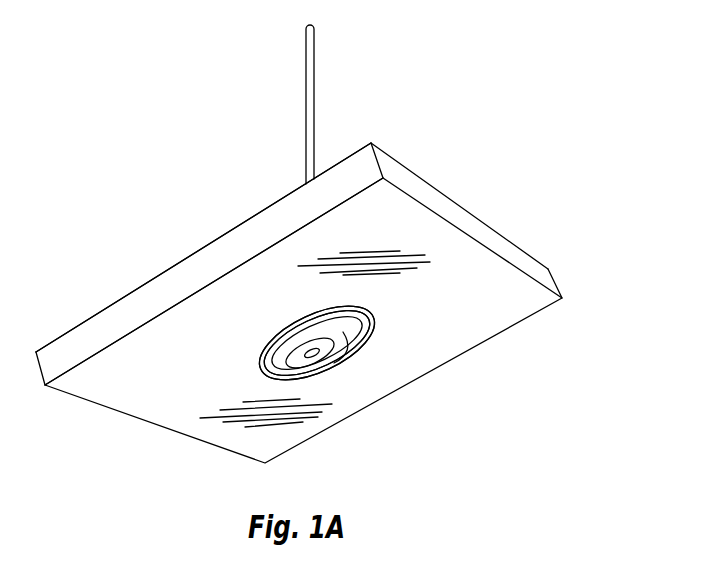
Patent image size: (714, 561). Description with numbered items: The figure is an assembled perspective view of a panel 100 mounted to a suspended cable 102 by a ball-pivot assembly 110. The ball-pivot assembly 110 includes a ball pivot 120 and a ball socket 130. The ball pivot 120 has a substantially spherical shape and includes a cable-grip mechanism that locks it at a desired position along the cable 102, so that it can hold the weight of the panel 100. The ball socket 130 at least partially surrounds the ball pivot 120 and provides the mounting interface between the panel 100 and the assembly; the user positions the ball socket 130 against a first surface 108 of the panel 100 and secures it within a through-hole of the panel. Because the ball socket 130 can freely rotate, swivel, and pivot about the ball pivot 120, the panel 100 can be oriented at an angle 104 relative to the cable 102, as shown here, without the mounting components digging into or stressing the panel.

The panel 100 is at (522, 262).
The suspended cable 102 is at (315, 77).
The angle 104 is at (299, 110).
The first surface 108 is at (477, 311).
The ball-pivot assembly 110 is at (373, 357).
The ball pivot 120 is at (330, 367).
The ball socket 130 is at (262, 356).